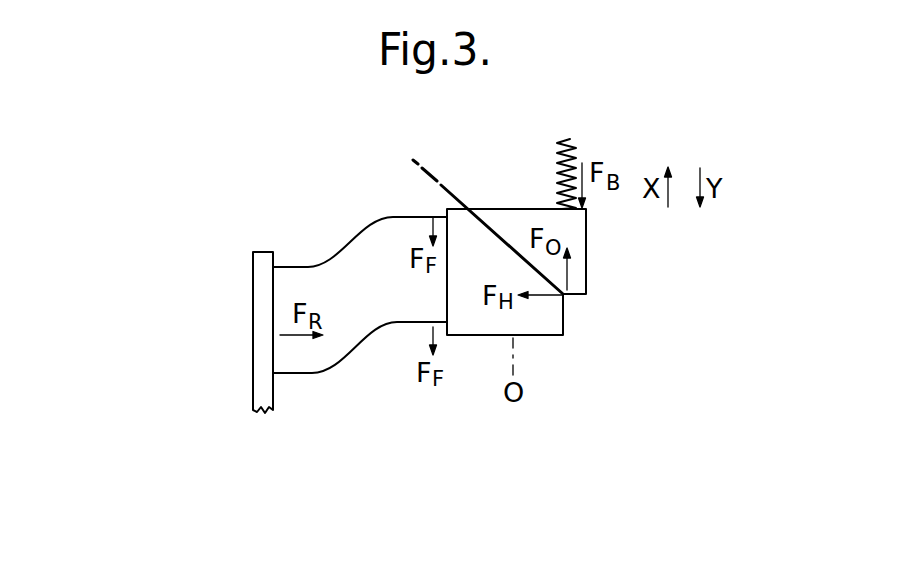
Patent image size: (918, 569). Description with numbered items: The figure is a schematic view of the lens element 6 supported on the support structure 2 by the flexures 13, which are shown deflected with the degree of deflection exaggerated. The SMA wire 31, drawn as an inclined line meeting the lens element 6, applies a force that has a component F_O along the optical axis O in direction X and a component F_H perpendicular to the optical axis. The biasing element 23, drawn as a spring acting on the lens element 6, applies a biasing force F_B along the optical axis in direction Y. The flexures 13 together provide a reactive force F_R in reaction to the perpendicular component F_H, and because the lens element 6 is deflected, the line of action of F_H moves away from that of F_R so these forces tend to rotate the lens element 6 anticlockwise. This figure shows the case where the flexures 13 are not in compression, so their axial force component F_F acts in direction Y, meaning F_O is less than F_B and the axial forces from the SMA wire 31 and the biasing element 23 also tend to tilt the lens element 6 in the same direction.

The support structure 2 is at (265, 301).
The flexures 13 is at (348, 243).
The lens element 6 is at (507, 218).
The SMA wire 31 is at (483, 220).
The biasing element 23 is at (568, 142).